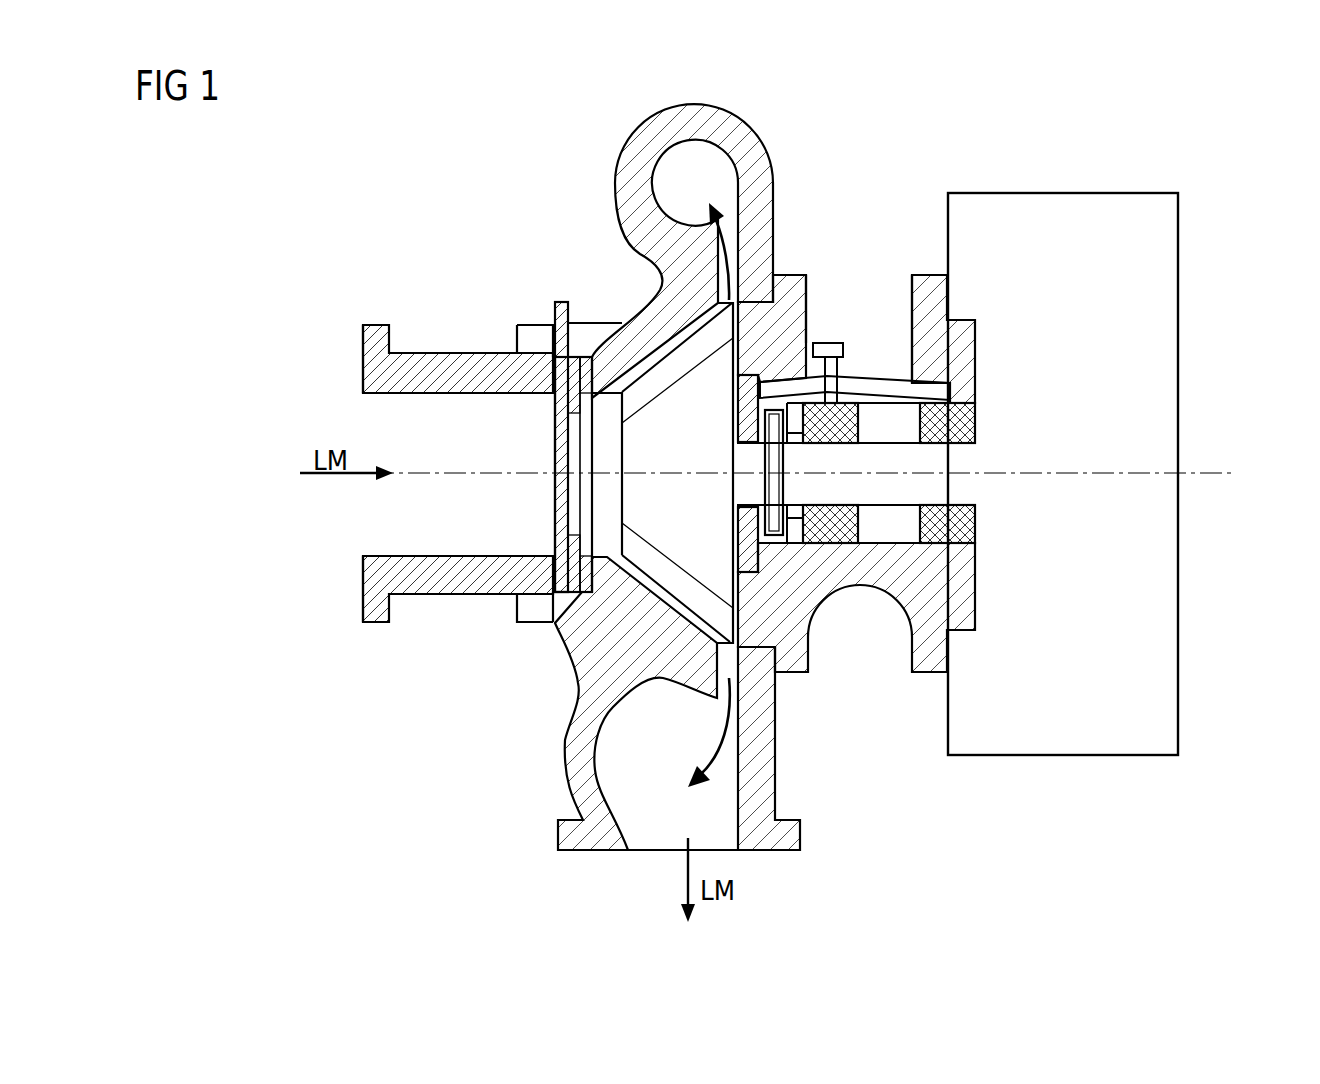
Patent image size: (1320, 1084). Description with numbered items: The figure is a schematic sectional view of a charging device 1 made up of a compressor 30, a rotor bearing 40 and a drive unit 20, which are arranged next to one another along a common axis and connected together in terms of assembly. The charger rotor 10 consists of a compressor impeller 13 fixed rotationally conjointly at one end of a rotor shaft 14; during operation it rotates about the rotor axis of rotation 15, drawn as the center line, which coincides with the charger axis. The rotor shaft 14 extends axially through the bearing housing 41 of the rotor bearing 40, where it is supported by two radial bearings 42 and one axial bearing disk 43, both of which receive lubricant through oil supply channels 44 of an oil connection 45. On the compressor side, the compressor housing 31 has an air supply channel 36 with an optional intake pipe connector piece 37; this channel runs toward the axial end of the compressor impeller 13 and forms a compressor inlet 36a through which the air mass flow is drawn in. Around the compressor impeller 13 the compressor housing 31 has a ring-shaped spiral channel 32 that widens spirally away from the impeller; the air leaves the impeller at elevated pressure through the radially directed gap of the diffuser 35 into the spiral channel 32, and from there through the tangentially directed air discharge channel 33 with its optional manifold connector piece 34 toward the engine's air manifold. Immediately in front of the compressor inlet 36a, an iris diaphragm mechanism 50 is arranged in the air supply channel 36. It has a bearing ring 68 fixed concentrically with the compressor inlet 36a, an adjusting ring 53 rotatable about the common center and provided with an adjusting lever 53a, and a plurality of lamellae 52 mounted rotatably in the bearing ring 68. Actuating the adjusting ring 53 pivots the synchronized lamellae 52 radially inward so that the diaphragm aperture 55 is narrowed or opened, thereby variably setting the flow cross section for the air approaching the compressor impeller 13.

The charging device 1 is at (955, 126).
The charger rotor 10 is at (592, 502).
The compressor impeller 13 is at (663, 413).
The rotor shaft 14 is at (883, 490).
The rotor axis of rotation 15 is at (1240, 476).
The drive unit 20 is at (1095, 755).
The compressor 30 is at (478, 745).
The compressor housing 31 is at (603, 653).
The spiral channel 32 is at (660, 175).
The air discharge channel 33 is at (652, 850).
The manifold connector piece 34 is at (578, 850).
The diffuser 35 is at (733, 257).
The air supply channel 36 is at (448, 413).
The compressor inlet 36a is at (607, 450).
The intake pipe connector piece 37 is at (373, 377).
The rotor bearing 40 is at (856, 536).
The bearing housing 41 is at (790, 577).
The radial bearings 42 is at (940, 425).
The axial bearing disk 43 is at (752, 387).
The oil supply channels 44 is at (857, 383).
The oil connection 45 is at (837, 343).
The iris diaphragm mechanism 50 is at (492, 468).
The lamellae 52 is at (577, 357).
The adjusting ring 53 is at (557, 593).
The adjusting lever 53a is at (558, 303).
The diaphragm aperture 55 is at (573, 518).
The bearing ring 68 is at (553, 625).